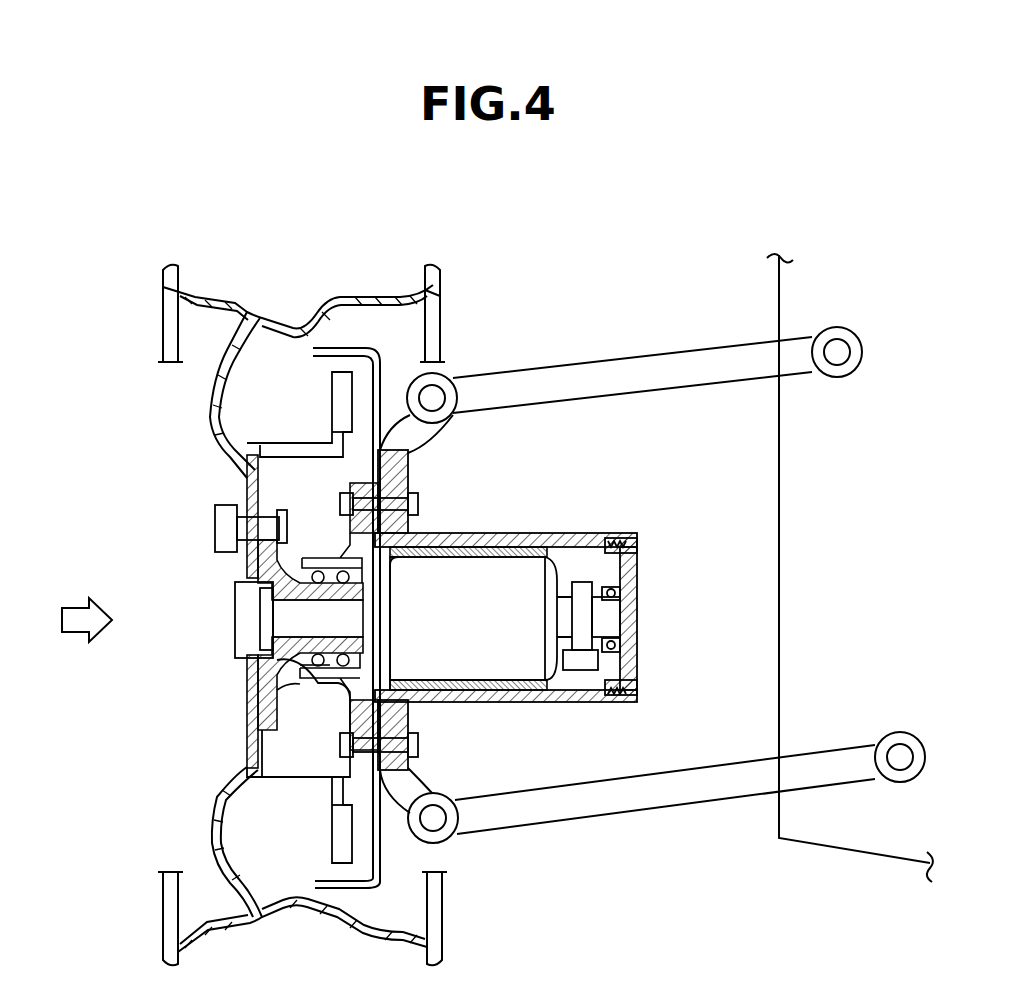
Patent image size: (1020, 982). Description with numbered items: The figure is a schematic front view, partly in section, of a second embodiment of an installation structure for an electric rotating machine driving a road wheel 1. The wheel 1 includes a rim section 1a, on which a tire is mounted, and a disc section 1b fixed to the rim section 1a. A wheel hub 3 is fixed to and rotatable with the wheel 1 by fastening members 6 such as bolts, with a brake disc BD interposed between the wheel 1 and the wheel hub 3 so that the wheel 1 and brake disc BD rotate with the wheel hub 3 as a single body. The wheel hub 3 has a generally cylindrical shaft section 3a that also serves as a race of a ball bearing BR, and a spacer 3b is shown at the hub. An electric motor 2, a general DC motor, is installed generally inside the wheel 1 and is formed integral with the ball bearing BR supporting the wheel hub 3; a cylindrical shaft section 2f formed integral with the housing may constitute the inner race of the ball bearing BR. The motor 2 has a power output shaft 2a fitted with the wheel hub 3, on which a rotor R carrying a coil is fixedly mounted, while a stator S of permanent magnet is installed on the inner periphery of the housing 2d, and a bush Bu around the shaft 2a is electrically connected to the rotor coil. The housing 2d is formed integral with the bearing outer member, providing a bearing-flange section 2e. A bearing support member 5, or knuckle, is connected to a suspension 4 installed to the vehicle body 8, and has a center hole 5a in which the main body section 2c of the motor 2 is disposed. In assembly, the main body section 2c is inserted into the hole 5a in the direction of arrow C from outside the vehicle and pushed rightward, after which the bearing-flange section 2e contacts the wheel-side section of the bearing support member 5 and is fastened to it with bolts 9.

The wheel 1 is at (222, 327).
The rim section 1a is at (443, 312).
The disc section 1b is at (210, 388).
The electric motor 2 is at (595, 527).
The power output shaft 2a is at (292, 624).
The main body section 2c is at (503, 533).
The housing 2d is at (555, 697).
The bearing-flange section 2e is at (342, 783).
The cylindrical shaft section 2f is at (302, 675).
The wheel hub 3 is at (270, 488).
The cylindrical shaft section 3a is at (297, 670).
The hub spacer 3b is at (303, 603).
The suspension 4 is at (708, 347).
The bearing support member 5 is at (416, 480).
The center hole 5a is at (417, 703).
The fastening members 6 is at (220, 530).
The vehicle body 8 is at (852, 842).
The bolts 9 is at (420, 503).
The rotor R is at (557, 563).
The stator S is at (467, 697).
The ball bearing BR is at (322, 690).
The brake disc BD is at (342, 833).
The bush Bu is at (580, 668).
The arrow C is at (75, 633).